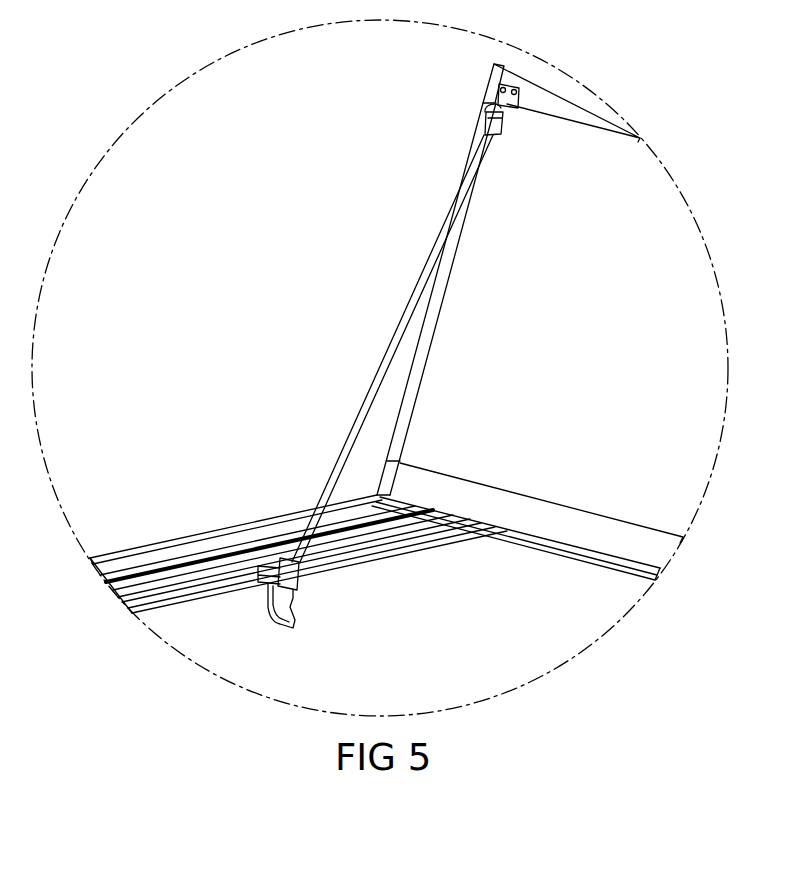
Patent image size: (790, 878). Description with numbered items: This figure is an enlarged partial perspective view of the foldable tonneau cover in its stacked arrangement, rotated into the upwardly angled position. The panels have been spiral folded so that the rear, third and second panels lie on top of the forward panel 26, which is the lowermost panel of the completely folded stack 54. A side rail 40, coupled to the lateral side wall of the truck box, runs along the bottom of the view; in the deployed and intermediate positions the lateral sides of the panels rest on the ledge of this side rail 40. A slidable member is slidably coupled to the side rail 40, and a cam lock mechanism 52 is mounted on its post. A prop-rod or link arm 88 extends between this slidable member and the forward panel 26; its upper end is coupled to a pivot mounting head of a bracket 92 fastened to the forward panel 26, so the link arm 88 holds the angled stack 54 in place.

The forward panel 26 is at (665, 200).
The completely folded stack 54 is at (671, 117).
The bracket 92 is at (488, 104).
The link arm 88 is at (361, 411).
The side rail 40 is at (251, 527).
The cam lock mechanism 52 is at (300, 590).